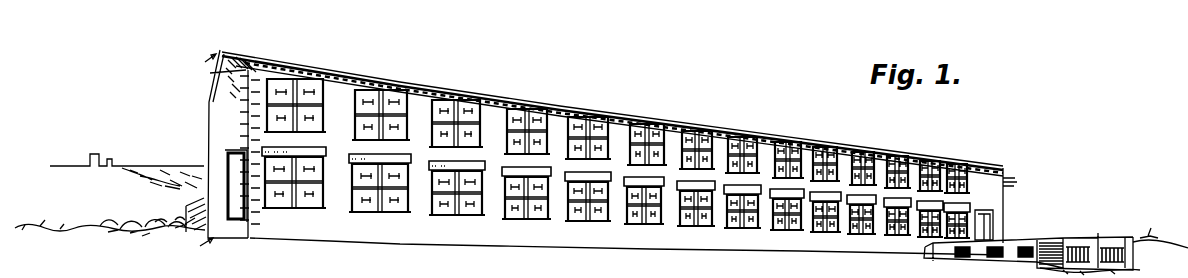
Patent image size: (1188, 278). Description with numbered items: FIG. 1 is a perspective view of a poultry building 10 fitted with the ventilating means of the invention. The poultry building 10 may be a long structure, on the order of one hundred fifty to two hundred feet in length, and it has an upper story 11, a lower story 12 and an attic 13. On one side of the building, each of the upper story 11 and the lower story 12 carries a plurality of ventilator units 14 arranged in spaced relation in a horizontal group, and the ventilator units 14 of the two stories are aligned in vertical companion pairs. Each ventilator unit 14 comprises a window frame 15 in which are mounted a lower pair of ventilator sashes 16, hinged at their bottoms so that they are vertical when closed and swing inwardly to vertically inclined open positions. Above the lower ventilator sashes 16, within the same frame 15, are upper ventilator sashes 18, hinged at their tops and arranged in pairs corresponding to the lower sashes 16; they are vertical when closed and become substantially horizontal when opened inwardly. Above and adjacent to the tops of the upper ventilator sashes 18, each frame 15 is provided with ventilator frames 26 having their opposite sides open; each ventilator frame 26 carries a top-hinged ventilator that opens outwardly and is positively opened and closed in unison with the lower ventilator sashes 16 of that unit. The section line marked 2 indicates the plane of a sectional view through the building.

The section line 2- 2 is at (200, 157).
The poultry building 10 is at (535, 99).
The upper story 11 is at (942, 177).
The lower story 12 is at (942, 215).
The attic 13 is at (209, 102).
The ventilator unit 14 is at (491, 158).
The window frame 15 is at (892, 258).
The lower ventilator sash 16 is at (825, 255).
The upper ventilator sash 18 is at (858, 162).
The ventilator frame 26 is at (305, 88).